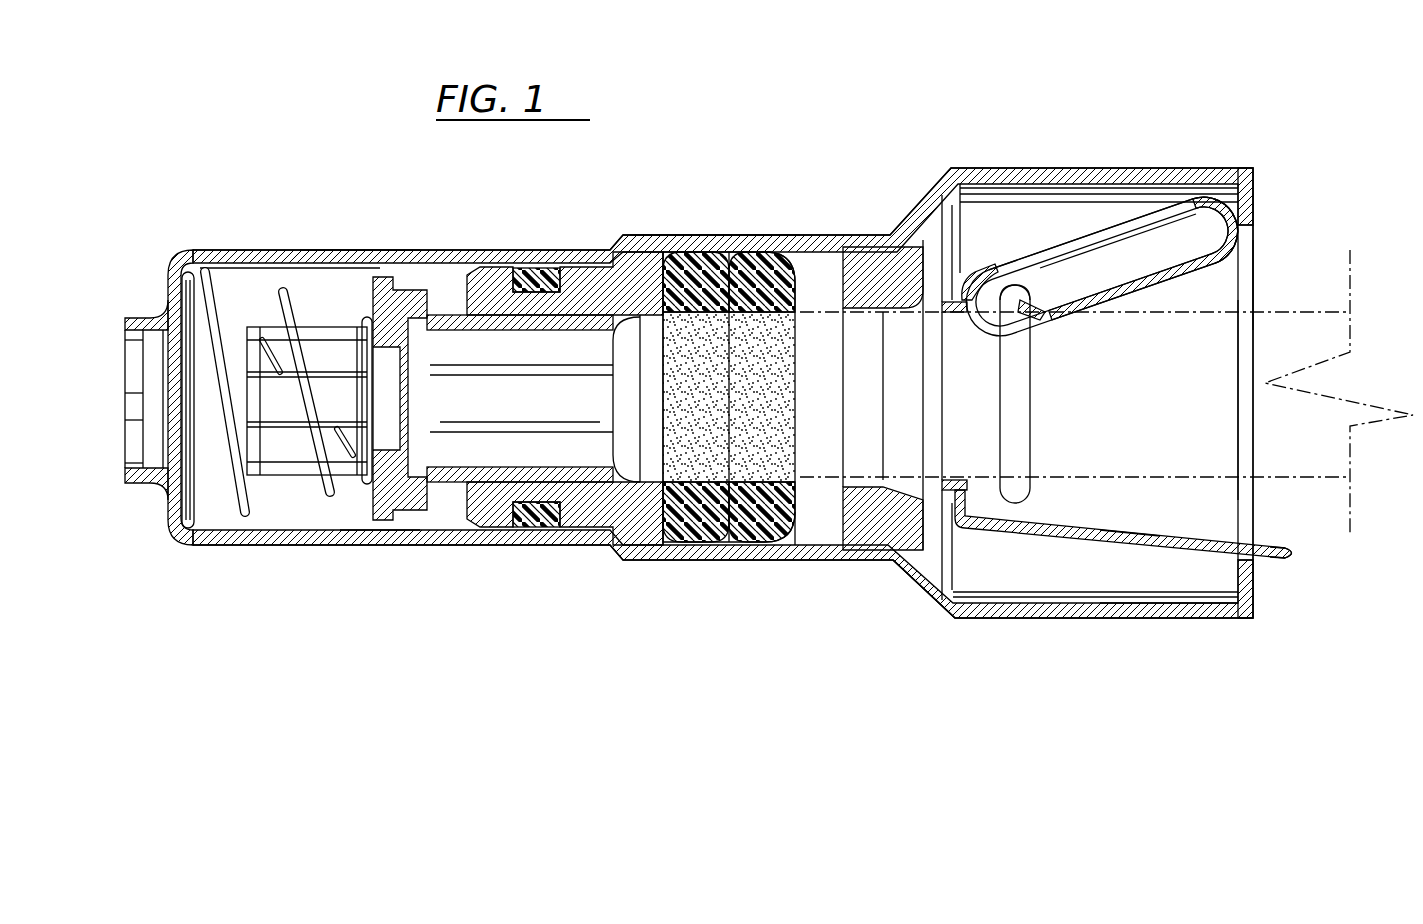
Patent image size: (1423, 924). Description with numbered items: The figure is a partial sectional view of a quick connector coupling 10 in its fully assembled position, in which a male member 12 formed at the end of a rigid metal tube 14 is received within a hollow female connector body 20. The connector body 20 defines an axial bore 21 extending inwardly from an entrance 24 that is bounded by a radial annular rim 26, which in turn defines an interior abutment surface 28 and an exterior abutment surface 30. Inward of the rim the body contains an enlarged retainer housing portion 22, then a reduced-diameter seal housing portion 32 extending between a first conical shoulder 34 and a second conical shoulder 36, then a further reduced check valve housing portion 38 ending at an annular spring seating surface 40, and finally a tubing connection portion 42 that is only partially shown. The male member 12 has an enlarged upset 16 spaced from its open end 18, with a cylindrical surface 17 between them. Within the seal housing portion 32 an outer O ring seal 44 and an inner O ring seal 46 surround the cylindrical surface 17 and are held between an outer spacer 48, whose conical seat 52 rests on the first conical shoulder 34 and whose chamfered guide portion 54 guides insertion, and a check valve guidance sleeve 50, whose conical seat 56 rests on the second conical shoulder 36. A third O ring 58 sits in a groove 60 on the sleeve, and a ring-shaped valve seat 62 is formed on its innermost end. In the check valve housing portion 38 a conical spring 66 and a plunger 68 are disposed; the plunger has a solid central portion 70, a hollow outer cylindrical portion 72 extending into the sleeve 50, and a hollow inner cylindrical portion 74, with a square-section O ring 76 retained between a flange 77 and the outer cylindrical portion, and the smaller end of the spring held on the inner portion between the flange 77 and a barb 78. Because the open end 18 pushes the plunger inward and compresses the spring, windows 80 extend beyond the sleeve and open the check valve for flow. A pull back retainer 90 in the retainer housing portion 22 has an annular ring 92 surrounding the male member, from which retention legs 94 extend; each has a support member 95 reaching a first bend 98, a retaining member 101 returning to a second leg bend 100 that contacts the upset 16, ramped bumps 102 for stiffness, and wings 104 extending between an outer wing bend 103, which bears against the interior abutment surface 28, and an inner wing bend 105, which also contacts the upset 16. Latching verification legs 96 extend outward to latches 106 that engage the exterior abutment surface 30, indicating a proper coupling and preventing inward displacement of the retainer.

The quick connector coupling 10 is at (258, 142).
The male member 12 is at (982, 484).
The tube 14 is at (1268, 305).
The upset 16 is at (1035, 490).
The cylindrical surface 17 is at (820, 305).
The open end 18 is at (597, 350).
The female connector body 20 is at (764, 241).
The axial bore 21 is at (1040, 600).
The retainer housing portion 22 is at (1135, 594).
The entrance 24 is at (1242, 497).
The radial annular rim 26 is at (1245, 575).
The interior abutment surface 28 is at (1195, 600).
The exterior abutment surface 30 is at (1250, 188).
The seal housing portion 32 is at (800, 542).
The first conical shoulder 34 is at (942, 566).
The second conical shoulder 36 is at (637, 545).
The check valve housing portion 38 is at (290, 524).
The annular spring seating surface 40 is at (200, 530).
The tubing connection portion 42 is at (135, 488).
The outer annular O ring seal 44 is at (760, 522).
The inner annular O ring seal 46 is at (688, 522).
The outer spacer 48 is at (870, 278).
The check valve guidance sleeve 50 is at (690, 250).
The conical seat 52 is at (897, 548).
The chamfered guide portion 54 is at (936, 300).
The conical seat 56 is at (628, 250).
The third annular O ring 58 is at (537, 520).
The groove 60 is at (530, 268).
The ring-shaped valve seat 62 is at (475, 490).
The spring 66 is at (222, 320).
The plunger 68 is at (379, 270).
The solid central portion 70 is at (393, 512).
The hollow outer cylindrical portion 72 is at (447, 315).
The hollow inner cylindrical portion 74 is at (270, 500).
The O ring 76 is at (418, 300).
The flange 77 is at (345, 546).
The barb 78 is at (345, 330).
The axially-extending windows 80 is at (305, 300).
The pull back retainer 90 is at (1030, 250).
The annular ring 92 is at (978, 274).
The retention legs 94 is at (1022, 262).
The support member 95 is at (1130, 207).
The latching verification legs 96 is at (1128, 537).
The first bends 98 is at (1225, 198).
The second leg bends 100 is at (1012, 302).
The retaining member 101 is at (1165, 245).
The ramped bumps 102 is at (1160, 298).
The outer wing bend 103 is at (1246, 233).
The wings 104 is at (1210, 255).
The inner wing bend 105 is at (1035, 314).
The latches 106 is at (1296, 555).